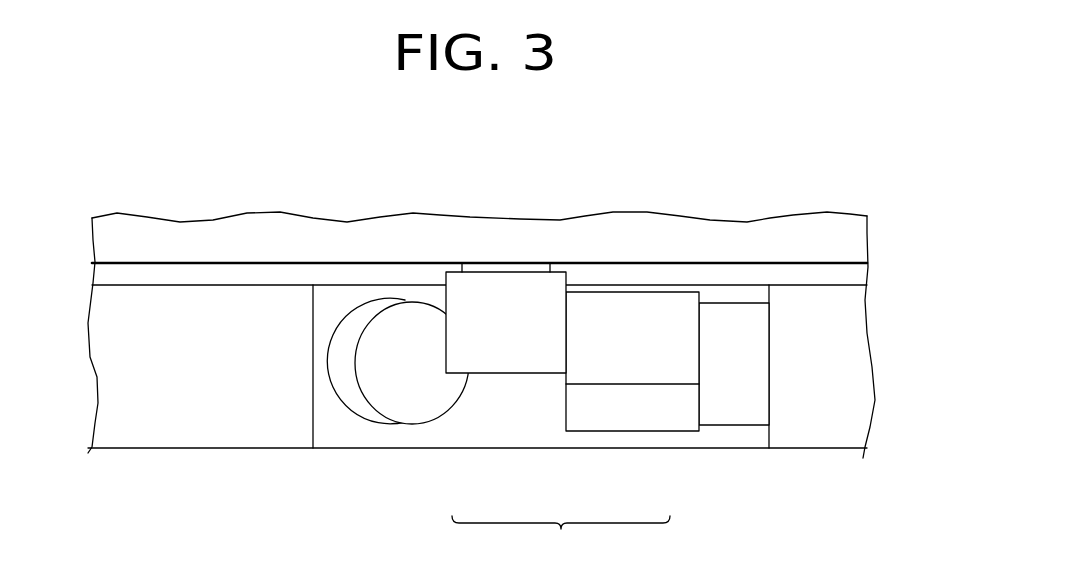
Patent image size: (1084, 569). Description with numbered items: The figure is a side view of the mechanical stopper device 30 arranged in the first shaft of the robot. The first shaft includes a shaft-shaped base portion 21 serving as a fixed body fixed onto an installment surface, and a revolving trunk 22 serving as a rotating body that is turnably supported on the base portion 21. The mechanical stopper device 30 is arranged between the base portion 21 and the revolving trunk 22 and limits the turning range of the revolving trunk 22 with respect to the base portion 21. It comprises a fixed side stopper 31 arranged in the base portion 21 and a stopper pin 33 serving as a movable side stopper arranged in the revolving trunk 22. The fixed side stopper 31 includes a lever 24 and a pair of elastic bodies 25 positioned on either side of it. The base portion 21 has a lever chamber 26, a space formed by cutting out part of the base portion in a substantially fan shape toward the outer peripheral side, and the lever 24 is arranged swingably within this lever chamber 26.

The base portion 21 is at (245, 433).
The revolving trunk 22 is at (557, 240).
The lever 24 is at (605, 415).
The elastic bodies 25 is at (413, 397).
The lever chamber 26 is at (770, 437).
The mechanical stopper device 30 is at (734, 147).
The fixed side stopper 31 is at (561, 539).
The stopper pin 33 is at (478, 305).